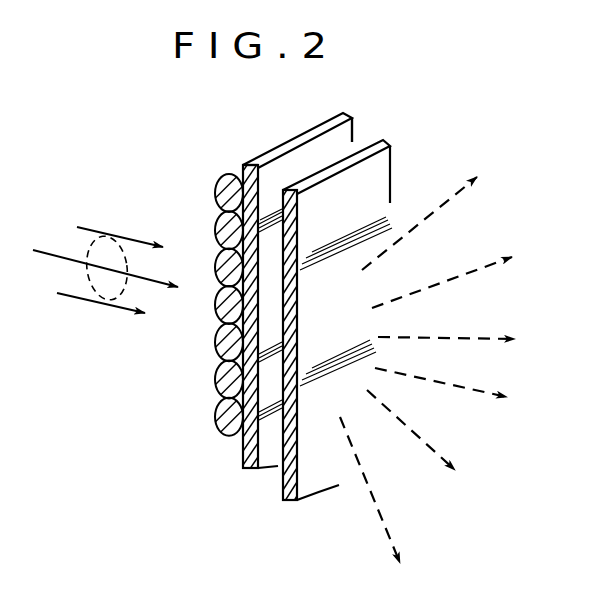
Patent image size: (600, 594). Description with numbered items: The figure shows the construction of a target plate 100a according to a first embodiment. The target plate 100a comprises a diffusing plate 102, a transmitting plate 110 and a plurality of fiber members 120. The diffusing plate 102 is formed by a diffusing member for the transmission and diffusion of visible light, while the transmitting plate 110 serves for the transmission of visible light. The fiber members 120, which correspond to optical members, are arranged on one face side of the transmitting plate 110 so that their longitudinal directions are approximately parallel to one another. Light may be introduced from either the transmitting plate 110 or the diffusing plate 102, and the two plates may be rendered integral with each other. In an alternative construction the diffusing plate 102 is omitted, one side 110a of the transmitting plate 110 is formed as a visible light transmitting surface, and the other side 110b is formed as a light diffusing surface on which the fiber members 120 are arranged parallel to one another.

The target plate 100a is at (212, 435).
The diffusing plate 102 is at (280, 477).
The transmitting plate 110 is at (288, 147).
The one side of the transmitting plate 110a is at (326, 147).
The other side of the transmitting plate 110b is at (235, 155).
The fiber members 120 is at (213, 232).